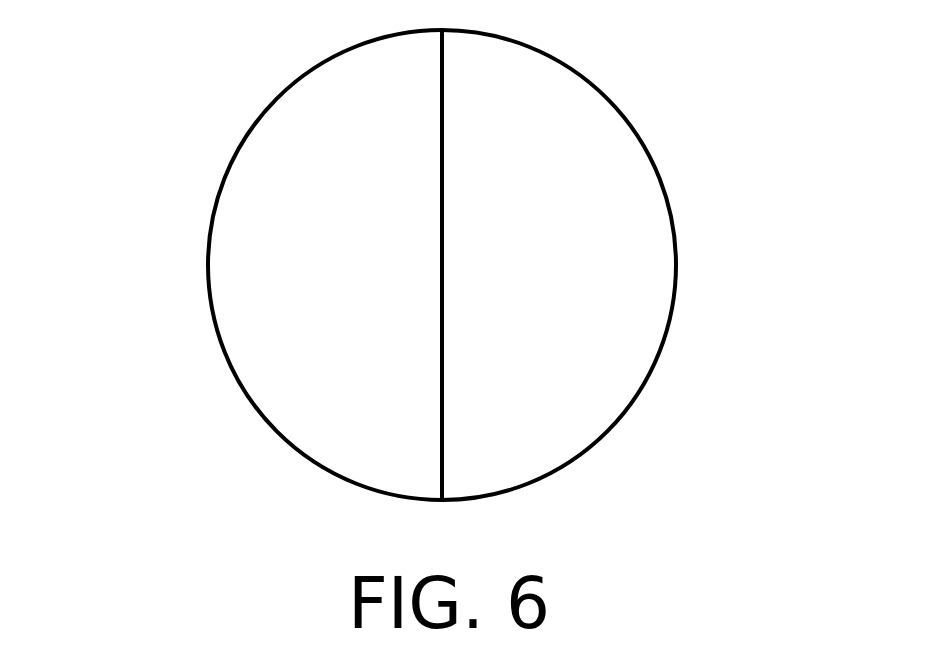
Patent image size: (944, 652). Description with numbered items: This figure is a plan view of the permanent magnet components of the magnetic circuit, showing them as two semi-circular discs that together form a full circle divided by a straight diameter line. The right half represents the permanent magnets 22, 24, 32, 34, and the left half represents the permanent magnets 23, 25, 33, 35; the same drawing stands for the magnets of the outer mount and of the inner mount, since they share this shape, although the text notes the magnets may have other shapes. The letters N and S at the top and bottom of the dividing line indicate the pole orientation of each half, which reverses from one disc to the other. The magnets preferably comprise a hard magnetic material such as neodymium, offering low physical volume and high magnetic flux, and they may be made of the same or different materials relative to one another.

The permanent magnet 22 is at (650, 265).
The permanent magnet 24 is at (650, 265).
The permanent magnet 32 is at (650, 265).
The permanent magnet 34 is at (658, 235).
The permanent magnet 23 is at (233, 265).
The permanent magnet 25 is at (233, 265).
The permanent magnet 33 is at (233, 265).
The permanent magnet 35 is at (228, 237).